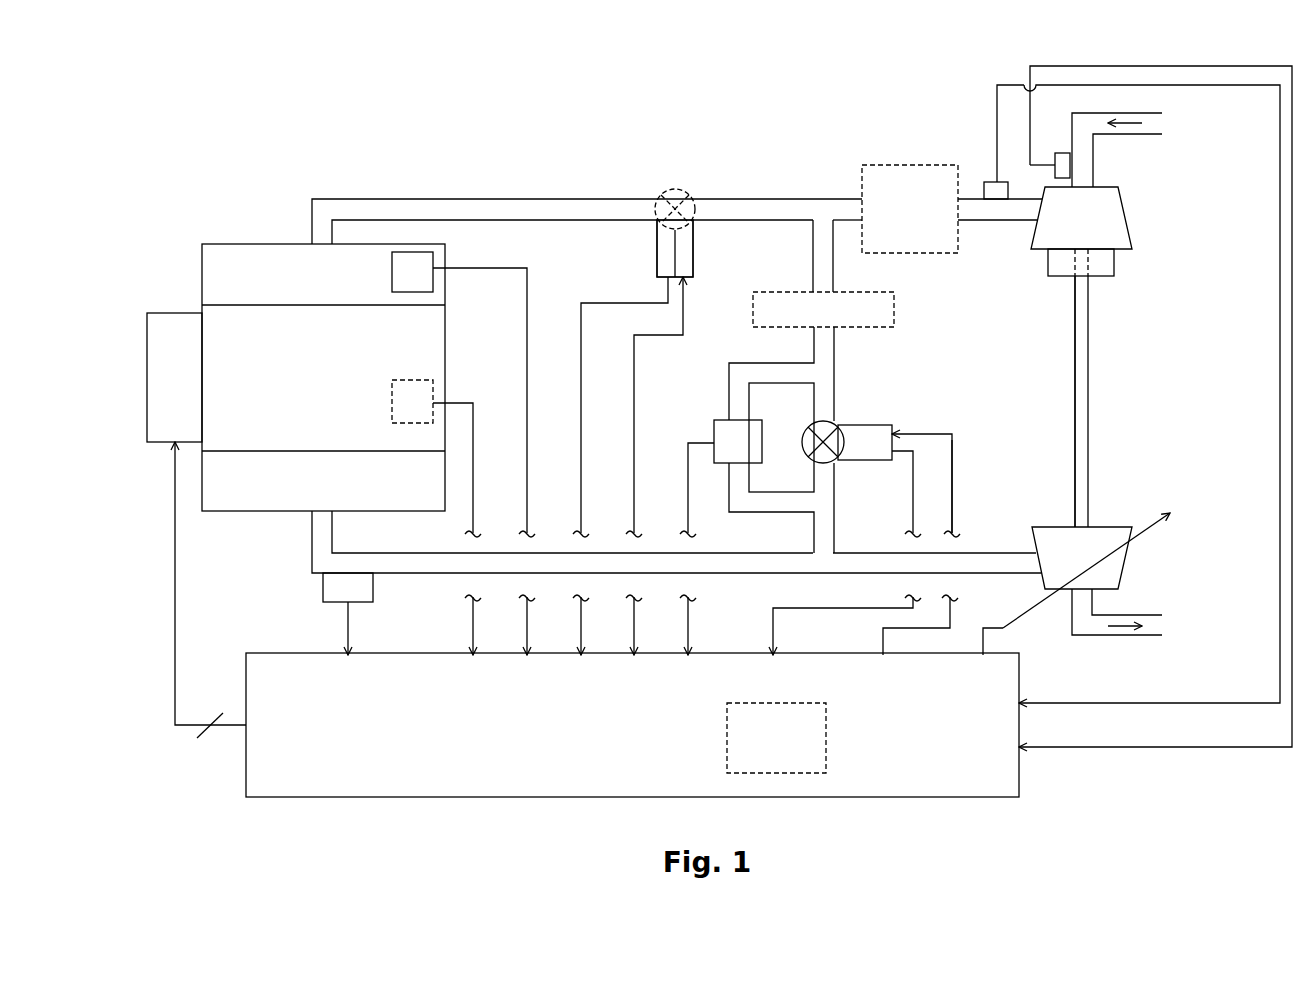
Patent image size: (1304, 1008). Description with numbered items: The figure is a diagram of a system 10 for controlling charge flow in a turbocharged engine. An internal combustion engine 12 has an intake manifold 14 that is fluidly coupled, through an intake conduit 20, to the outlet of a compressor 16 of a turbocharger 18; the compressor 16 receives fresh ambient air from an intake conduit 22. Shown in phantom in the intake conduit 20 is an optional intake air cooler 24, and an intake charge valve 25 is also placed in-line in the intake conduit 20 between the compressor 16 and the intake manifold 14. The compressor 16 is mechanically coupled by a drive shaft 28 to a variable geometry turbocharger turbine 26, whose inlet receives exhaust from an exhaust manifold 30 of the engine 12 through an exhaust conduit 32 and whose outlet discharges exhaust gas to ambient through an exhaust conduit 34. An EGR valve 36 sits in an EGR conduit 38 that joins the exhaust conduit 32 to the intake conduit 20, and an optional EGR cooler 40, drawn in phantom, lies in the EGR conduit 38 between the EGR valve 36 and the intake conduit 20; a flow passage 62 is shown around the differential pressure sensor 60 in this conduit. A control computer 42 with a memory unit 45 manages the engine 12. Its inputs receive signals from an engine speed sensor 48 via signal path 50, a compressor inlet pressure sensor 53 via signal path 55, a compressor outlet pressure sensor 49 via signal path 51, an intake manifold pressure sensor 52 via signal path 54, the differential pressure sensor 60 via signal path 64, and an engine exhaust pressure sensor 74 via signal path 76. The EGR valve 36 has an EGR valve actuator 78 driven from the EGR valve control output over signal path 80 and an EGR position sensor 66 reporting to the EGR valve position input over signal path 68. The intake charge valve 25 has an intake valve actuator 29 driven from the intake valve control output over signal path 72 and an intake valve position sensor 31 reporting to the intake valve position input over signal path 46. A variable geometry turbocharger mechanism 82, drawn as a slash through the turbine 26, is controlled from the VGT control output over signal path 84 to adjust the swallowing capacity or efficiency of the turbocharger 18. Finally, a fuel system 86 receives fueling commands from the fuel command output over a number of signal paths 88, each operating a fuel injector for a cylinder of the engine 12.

The system 10 is at (290, 151).
The internal combustion engine 12 is at (445, 322).
The intake manifold 14 is at (235, 244).
The compressor 16 is at (1127, 217).
The turbocharger 18 is at (1152, 352).
The intake conduit 20 is at (465, 198).
The intake conduit 22 is at (1138, 136).
The intake air cooler 24 is at (937, 253).
The intake charge valve 25 is at (675, 189).
The variable geometry turbocharger turbine 26 is at (1053, 527).
The drive shaft 28 is at (1088, 400).
The intake valve actuator 29 is at (693, 252).
The exhaust manifold 30 is at (237, 513).
The intake valve position sensor 31 is at (657, 252).
The exhaust conduit 32 is at (433, 573).
The exhaust conduit 34 is at (1143, 635).
The EGR valve 36 is at (822, 422).
The EGR conduit 38 is at (833, 530).
The EGR cooler 40 is at (895, 308).
The control computer 42 is at (1019, 777).
The memory unit 45 is at (725, 757).
The signal path 46 is at (581, 412).
The engine speed sensor 48 is at (410, 380).
The compressor outlet pressure sensor 49 is at (992, 182).
The signal path 50 is at (462, 402).
The signal path 51 is at (1280, 473).
The intake manifold pressure sensor 52 is at (413, 252).
The compressor inlet pressure sensor 53 is at (1062, 153).
The signal path 54 is at (480, 268).
The signal path 55 is at (1030, 68).
The differential pressure sensor 60 is at (714, 433).
The EGR flow passage 62 is at (783, 513).
The signal path 64 is at (688, 627).
The EGR position sensor 66 is at (862, 460).
The signal path 68 is at (853, 608).
The signal path 72 is at (634, 362).
The engine exhaust pressure sensor 74 is at (323, 590).
The signal path 76 is at (347, 627).
The EGR valve actuator 78 is at (872, 425).
The signal path 80 is at (952, 442).
The variable geometry turbocharger mechanism 82 is at (1147, 530).
The signal path 84 is at (1018, 615).
The fuel system 86 is at (177, 313).
The signal paths 88 is at (175, 620).